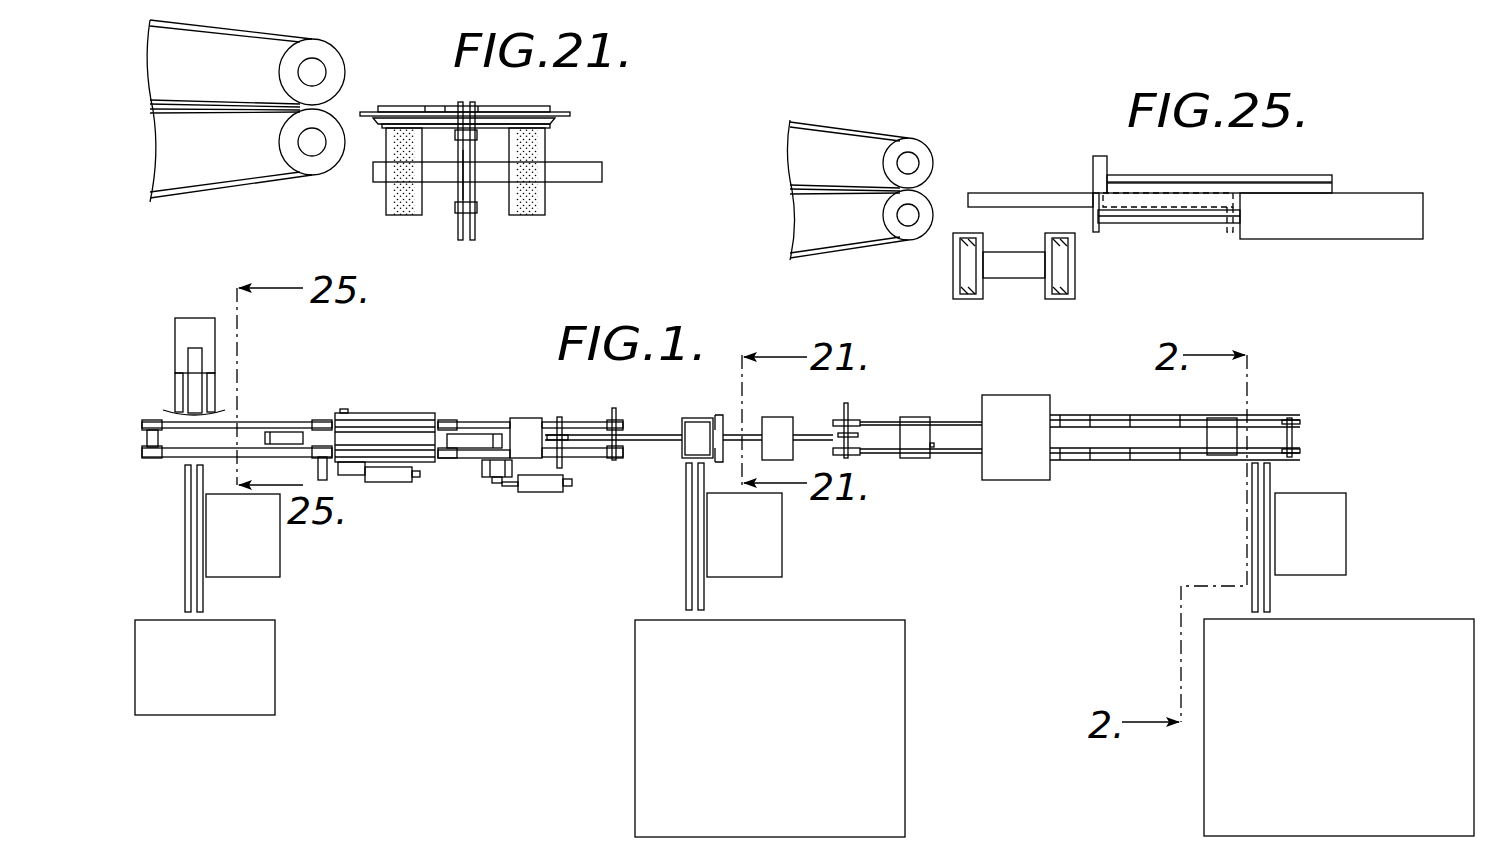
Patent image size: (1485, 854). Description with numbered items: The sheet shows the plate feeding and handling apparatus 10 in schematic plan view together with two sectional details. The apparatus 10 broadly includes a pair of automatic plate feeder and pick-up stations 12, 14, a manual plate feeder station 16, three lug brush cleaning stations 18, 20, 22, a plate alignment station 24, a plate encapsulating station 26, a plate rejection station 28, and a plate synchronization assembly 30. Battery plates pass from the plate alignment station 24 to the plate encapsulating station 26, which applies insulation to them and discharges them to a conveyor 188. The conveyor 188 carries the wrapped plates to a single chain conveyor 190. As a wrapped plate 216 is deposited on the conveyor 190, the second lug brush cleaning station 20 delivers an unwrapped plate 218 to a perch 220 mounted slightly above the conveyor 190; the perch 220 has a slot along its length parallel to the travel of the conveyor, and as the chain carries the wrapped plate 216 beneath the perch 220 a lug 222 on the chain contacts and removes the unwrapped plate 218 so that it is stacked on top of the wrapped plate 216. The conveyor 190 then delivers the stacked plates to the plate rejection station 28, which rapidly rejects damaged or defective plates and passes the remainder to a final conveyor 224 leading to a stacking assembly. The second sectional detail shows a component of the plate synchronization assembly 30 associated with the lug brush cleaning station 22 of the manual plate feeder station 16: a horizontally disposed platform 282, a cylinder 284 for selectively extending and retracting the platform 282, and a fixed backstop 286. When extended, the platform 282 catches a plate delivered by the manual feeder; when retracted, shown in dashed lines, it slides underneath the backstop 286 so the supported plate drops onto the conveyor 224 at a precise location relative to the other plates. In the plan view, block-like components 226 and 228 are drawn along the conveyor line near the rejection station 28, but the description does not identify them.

In FIG. 1, the plate feeding and handling apparatus 10 is at (1283, 350).
In FIG. 1, the automatic plate feeder and pick-up station 12 is at (1397, 612).
In FIG. 1, the automatic plate feeder and pick-up station 14 is at (877, 615).
In FIG. 1, the manual plate feeder station 16 is at (281, 652).
In FIG. 1, the lug brush cleaning station 18 is at (1353, 487).
In FIG. 21, the lug brush cleaning station 20 is at (316, 26).
In FIG. 1, the lug brush cleaning station 20 is at (793, 536).
In FIG. 25, the lug brush cleaning station 22 is at (926, 130).
In FIG. 1, the lug brush cleaning station 22 is at (285, 578).
In FIG. 1, the plate alignment station 24 is at (1112, 395).
In FIG. 1, the plate encapsulating station 26 is at (1025, 477).
In FIG. 1, the plate rejection station 28 is at (408, 389).
In FIG. 1, the plate synchronization assembly 30 is at (273, 402).
In FIG. 1, the conveyor 188 is at (948, 410).
In FIG. 21, the single chain conveyor 190 is at (476, 140).
In FIG. 1, the single chain conveyor 190 is at (642, 441).
In FIG. 21, the wrapped plate 216 is at (556, 124).
In FIG. 1, the wrapped plate 216 is at (777, 418).
In FIG. 21, the unwrapped plate 218 is at (548, 110).
In FIG. 1, the unwrapped plate 218 is at (697, 420).
In FIG. 21, the perch 220 is at (370, 112).
In FIG. 1, the perch 220 is at (697, 423).
In FIG. 21, the lug 222 is at (470, 104).
In FIG. 25, the final conveyor 224 is at (1088, 270).
In FIG. 1, the final conveyor 224 is at (287, 420).
In FIG. 1, the drive block 226 is at (543, 405).
In FIG. 1, the motor unit 228 is at (392, 408).
In FIG. 25, the platform 282 is at (1025, 193).
In FIG. 25, the cylinder 284 is at (1373, 200).
In FIG. 25, the backstop 286 is at (1099, 157).